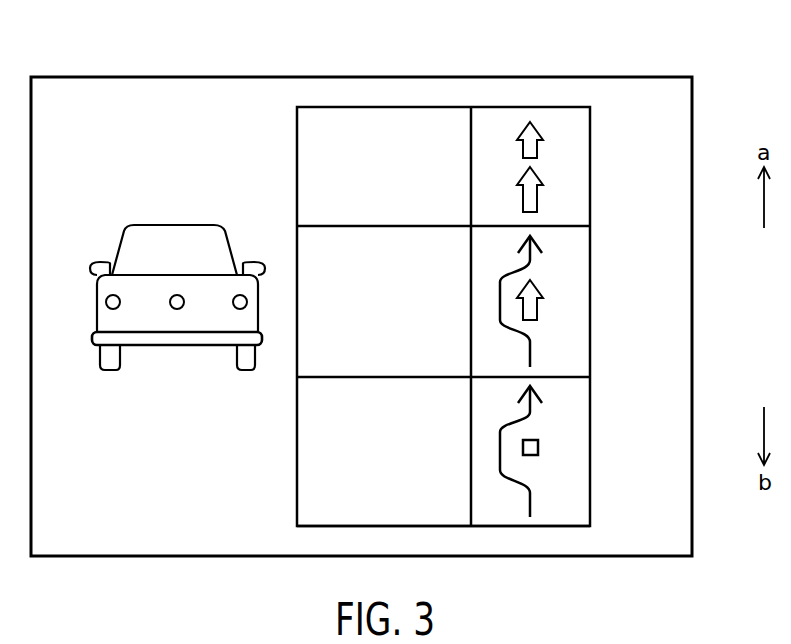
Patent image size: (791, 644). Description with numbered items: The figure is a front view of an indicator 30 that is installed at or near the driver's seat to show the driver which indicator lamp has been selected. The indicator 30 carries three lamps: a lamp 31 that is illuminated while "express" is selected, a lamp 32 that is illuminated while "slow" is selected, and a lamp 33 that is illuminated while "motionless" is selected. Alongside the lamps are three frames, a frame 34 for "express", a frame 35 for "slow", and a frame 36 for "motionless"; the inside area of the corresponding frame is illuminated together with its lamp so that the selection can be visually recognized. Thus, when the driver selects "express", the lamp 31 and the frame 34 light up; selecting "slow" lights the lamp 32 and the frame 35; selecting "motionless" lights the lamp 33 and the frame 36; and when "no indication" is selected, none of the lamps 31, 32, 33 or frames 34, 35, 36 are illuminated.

The indicator 30 is at (548, 75).
The lamp 31 is at (236, 308).
The lamp 32 is at (177, 309).
The lamp 33 is at (118, 308).
The frame 34 is at (591, 165).
The frame 35 is at (591, 300).
The frame 36 is at (591, 449).